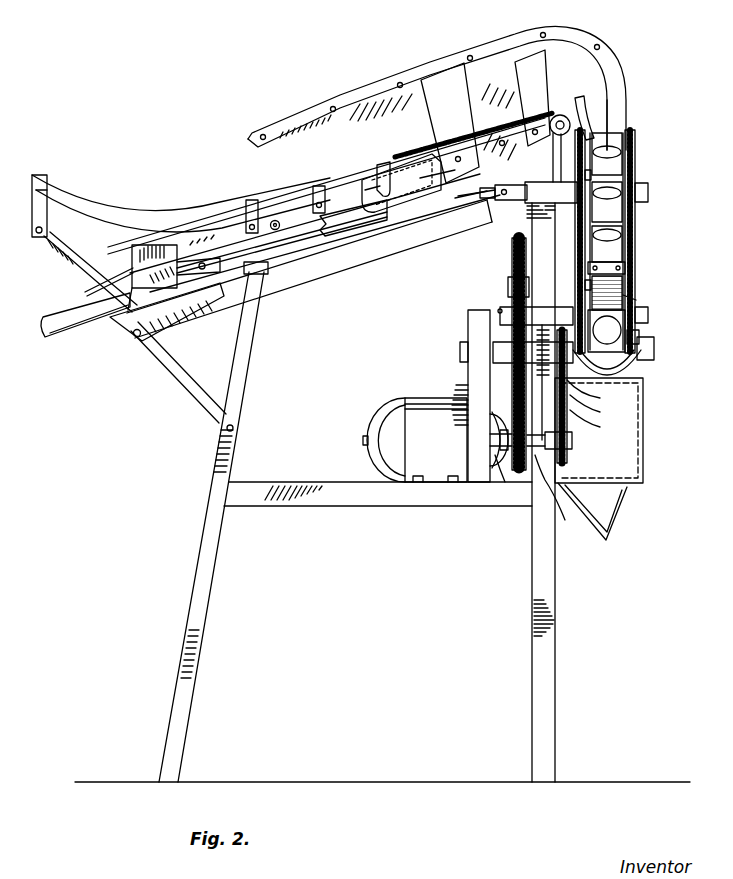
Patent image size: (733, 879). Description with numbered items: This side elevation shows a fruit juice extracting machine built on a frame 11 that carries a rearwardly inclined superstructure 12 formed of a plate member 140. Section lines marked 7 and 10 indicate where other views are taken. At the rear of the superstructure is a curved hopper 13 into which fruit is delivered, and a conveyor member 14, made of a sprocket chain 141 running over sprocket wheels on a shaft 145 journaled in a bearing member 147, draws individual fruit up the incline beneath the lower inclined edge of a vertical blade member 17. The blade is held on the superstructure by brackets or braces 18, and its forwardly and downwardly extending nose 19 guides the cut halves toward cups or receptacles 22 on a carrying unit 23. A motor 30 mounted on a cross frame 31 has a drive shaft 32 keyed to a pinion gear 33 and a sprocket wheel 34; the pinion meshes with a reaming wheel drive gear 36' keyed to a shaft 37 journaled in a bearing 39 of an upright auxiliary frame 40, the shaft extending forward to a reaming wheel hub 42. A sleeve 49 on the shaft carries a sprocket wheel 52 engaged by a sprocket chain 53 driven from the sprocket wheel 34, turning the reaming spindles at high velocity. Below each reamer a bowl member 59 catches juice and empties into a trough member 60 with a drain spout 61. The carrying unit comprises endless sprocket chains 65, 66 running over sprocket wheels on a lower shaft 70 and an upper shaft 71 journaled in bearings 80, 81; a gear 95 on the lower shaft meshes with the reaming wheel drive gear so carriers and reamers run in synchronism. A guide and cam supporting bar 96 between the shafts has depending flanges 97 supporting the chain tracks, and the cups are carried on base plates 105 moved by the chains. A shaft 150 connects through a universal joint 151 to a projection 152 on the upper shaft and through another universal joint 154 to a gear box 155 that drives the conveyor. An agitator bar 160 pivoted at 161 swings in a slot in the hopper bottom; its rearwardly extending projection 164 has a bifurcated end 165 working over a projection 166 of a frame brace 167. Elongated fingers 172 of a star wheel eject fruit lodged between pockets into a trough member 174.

The section line 7- 7 is at (394, 139).
The section line 10- 10 is at (151, 195).
The frame 11 is at (519, 534).
The superstructure 12 is at (309, 276).
The curved hopper 13 is at (80, 212).
The conveyor member 14 is at (395, 140).
The vertical blade member 17 is at (312, 128).
The brackets or braces 18 is at (438, 104).
The nose 19 is at (620, 118).
The cups or receptacles 22 is at (620, 152).
The carrying unit 23 is at (648, 240).
The motor 30 is at (426, 410).
The cross frame 31 is at (385, 510).
The drive shaft 32 is at (565, 522).
The pinion gear 33 is at (500, 470).
The sprocket wheel 34 is at (572, 442).
The reaming wheel drive gear 36' is at (456, 403).
The shaft 37 is at (656, 346).
The bearing 39 is at (462, 350).
The upright auxiliary frame 40 is at (470, 318).
The hub 42 is at (642, 338).
The sleeve 49 is at (593, 391).
The sprocket wheel 52 is at (596, 406).
The sprocket chain 53 is at (596, 421).
The bowl member 59 is at (640, 366).
The trough member 60 is at (645, 410).
The drain spout 61 is at (625, 512).
The endless sprocket chain 65 is at (535, 203).
The endless sprocket chain 66 is at (635, 220).
The lower shaft 70 is at (650, 315).
The shaft 71 is at (650, 192).
The bearing 80 is at (548, 340).
The bearing 81 is at (520, 205).
The gear 95 is at (510, 270).
The guide and cam supporting bar 96 is at (632, 290).
The depending flange 97 is at (640, 300).
The base plate 105 is at (630, 178).
The plate member 140 is at (335, 236).
The sprocket chain 141 is at (506, 125).
The shaft 145 is at (580, 100).
The bearing member 147 is at (557, 114).
The shaft 150 is at (387, 216).
The universal joint 151 is at (490, 200).
The projection 152 is at (515, 185).
The universal joint 154 is at (205, 262).
The gear box 155 is at (130, 333).
The agitator bar 160 is at (268, 210).
The pivot 161 is at (392, 196).
The rearwardly extending projection 164 is at (108, 280).
The bifurcated end 165 is at (82, 290).
The projection 166 is at (76, 274).
The frame brace 167 is at (185, 385).
The elongated finger 172 is at (385, 157).
The trough member 174 is at (405, 215).